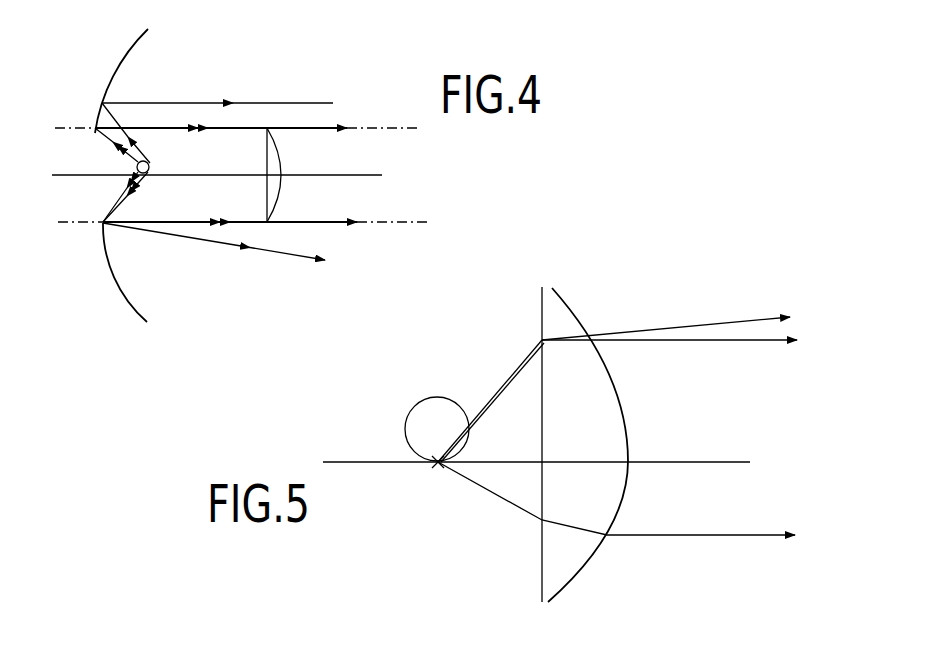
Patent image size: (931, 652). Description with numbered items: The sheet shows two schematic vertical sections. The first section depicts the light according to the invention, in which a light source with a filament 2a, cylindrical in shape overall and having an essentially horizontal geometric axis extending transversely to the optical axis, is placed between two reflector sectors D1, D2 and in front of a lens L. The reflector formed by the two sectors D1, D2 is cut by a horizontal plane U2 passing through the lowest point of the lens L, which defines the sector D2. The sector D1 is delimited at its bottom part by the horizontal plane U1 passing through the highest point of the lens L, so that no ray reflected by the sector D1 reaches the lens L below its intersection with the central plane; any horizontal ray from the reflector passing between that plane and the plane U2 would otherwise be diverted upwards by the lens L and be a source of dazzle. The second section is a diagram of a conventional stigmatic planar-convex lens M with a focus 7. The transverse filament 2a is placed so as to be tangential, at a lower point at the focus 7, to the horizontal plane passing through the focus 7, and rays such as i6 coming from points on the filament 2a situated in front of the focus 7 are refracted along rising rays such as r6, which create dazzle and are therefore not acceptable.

In FIG. 4, the sector D1 is at (125, 52).
In FIG. 4, the sector D2 is at (121, 295).
In FIG. 4, the filament 2a is at (157, 170).
In FIG. 5, the filament 2a is at (408, 412).
In FIG. 4, the lens L is at (278, 155).
In FIG. 4, the horizontal plane U1 is at (378, 128).
In FIG. 4, the horizontal plane U2 is at (397, 222).
In FIG. 5, the stigmatic planar-convex lens M is at (627, 413).
In FIG. 5, the rising ray r6 is at (717, 320).
In FIG. 5, the ray i6 is at (490, 413).
In FIG. 5, the focus 7 is at (435, 465).